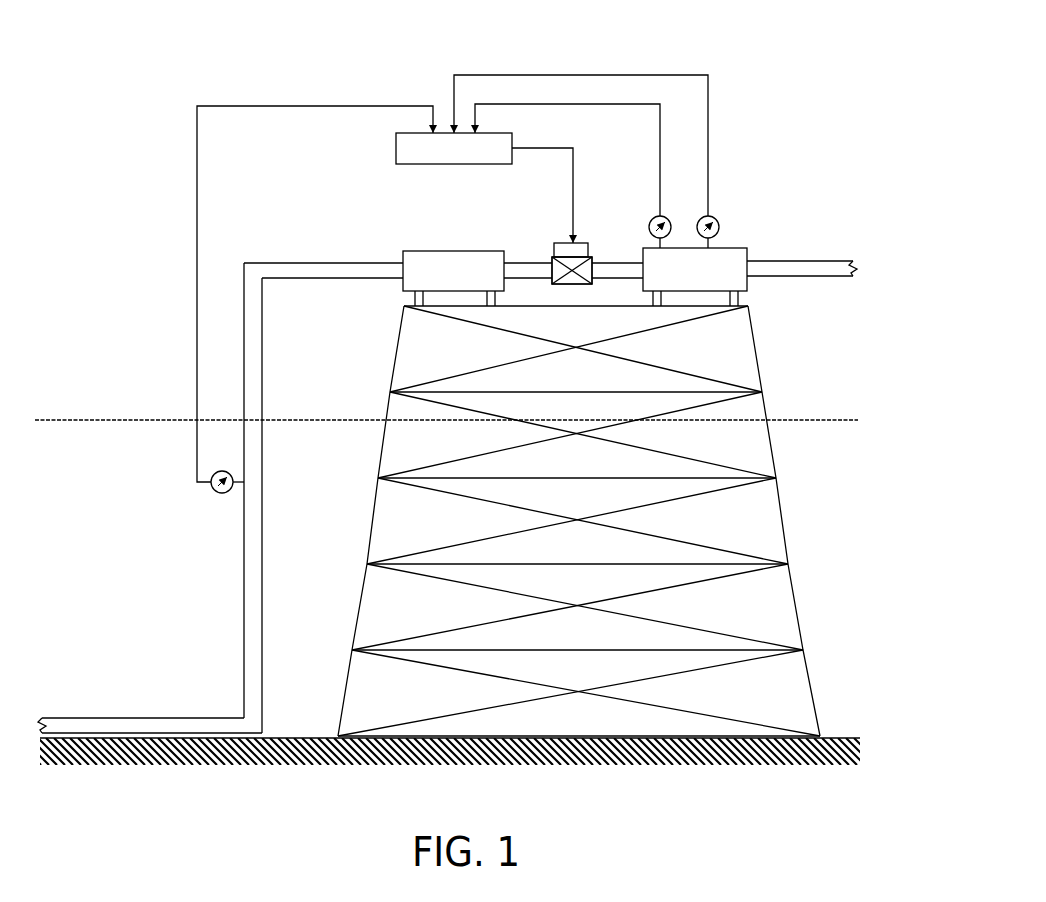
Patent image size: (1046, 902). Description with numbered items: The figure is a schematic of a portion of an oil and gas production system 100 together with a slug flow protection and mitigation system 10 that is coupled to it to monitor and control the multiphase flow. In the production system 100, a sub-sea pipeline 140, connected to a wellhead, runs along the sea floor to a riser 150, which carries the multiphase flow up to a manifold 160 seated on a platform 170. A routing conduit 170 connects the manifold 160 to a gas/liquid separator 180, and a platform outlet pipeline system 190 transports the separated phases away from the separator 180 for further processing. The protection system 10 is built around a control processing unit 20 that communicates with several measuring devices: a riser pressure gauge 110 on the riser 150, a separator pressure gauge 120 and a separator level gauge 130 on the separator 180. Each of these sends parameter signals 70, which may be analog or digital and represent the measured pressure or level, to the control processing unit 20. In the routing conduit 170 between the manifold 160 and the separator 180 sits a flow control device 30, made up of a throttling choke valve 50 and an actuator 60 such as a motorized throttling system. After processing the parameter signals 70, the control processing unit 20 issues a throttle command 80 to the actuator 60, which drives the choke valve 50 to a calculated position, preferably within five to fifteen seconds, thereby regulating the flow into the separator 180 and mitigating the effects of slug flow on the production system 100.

The slug flow protection and mitigation system 10 is at (407, 77).
The control processing unit 20 is at (413, 149).
The flow control device 30 is at (585, 225).
The throttling choke valve 50 is at (560, 269).
The actuator 60 is at (568, 250).
The parameter signals 70 is at (197, 123).
The throttle command or signal 80 is at (573, 160).
The oil and gas production system 100 is at (818, 145).
The riser pressure gauge 110 is at (213, 490).
The separator pressure gauge 120 is at (648, 217).
The separator level gauge 130 is at (720, 222).
The sub-sea pipeline 140 is at (158, 725).
The riser 150 is at (250, 605).
The manifold 160 is at (438, 267).
The routing conduit 170 is at (530, 270).
The gas/liquid separator 180 is at (728, 255).
The platform outlet pipeline system 190 is at (790, 268).